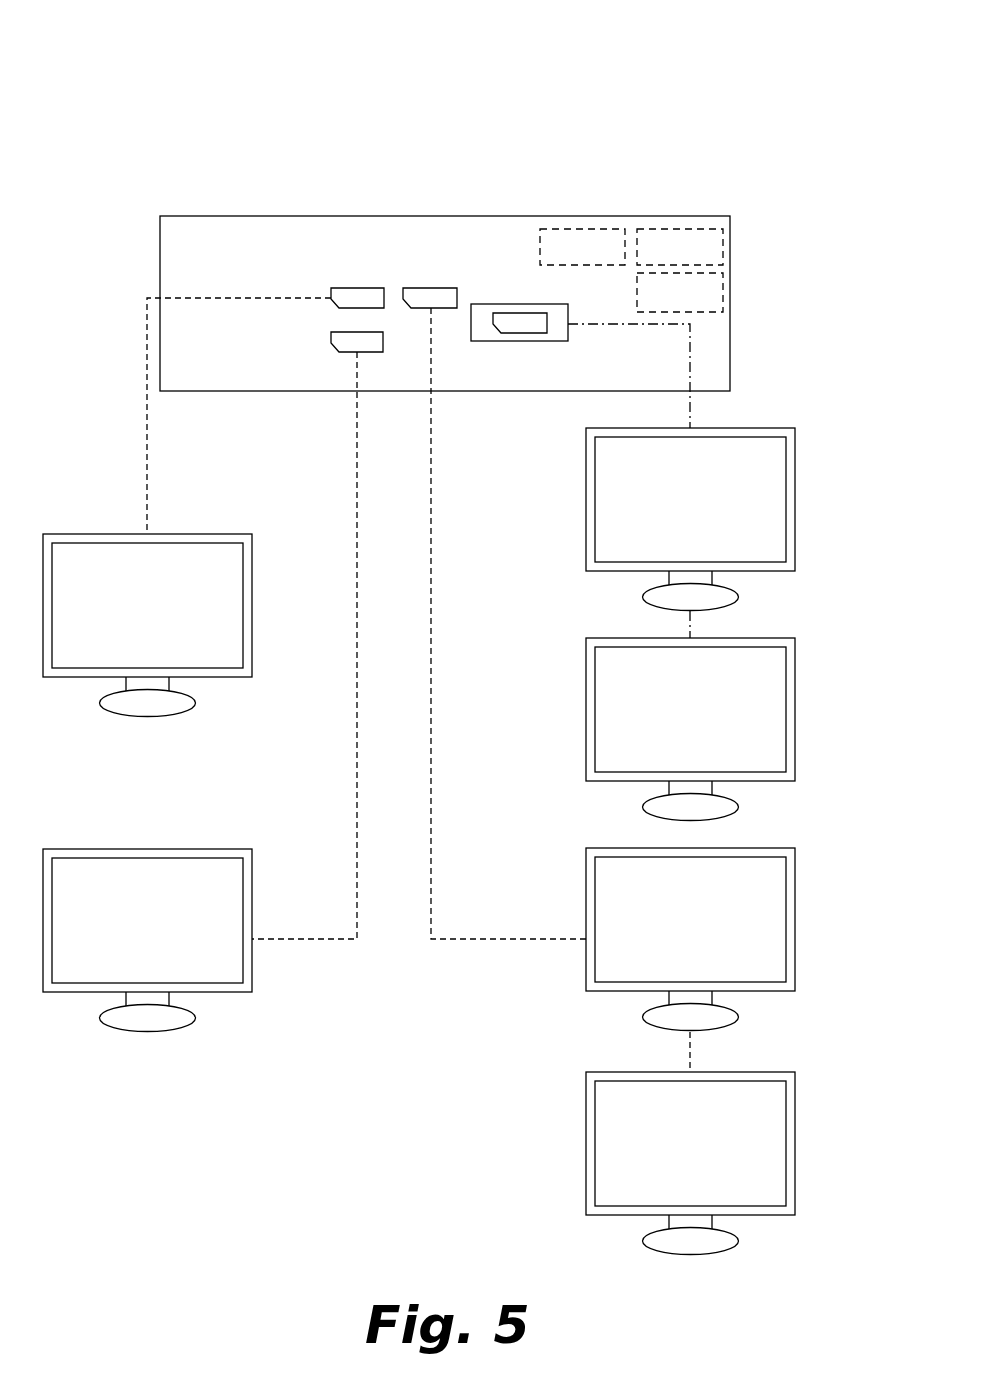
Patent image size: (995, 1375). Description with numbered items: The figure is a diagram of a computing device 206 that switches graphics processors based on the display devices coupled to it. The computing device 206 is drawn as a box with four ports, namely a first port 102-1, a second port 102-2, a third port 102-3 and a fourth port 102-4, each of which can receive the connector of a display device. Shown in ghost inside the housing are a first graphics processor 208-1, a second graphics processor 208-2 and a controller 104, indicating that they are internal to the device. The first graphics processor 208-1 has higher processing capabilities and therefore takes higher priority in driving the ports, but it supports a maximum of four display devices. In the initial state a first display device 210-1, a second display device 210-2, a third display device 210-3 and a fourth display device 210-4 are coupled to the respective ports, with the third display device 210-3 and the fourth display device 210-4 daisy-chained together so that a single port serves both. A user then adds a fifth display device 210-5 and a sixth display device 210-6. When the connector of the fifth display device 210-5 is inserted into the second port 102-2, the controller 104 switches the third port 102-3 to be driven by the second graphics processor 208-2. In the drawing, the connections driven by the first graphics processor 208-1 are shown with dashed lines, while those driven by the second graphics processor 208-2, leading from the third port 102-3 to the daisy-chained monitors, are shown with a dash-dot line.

The computing device 206 is at (191, 80).
The first port 102-1 is at (358, 296).
The second port 102-2 is at (446, 295).
The third port 102-3 is at (522, 316).
The fourth port 102-4 is at (347, 340).
The first graphics processor 208-1 is at (582, 247).
The second graphics processor 208-2 is at (680, 247).
The controller 104 is at (680, 292).
The first display device 210-1 is at (122, 534).
The second display device 210-2 is at (122, 849).
The third display device 210-3 is at (590, 524).
The fourth display device 210-4 is at (590, 717).
The fifth display device 210-5 is at (590, 927).
The sixth display device 210-6 is at (590, 1122).